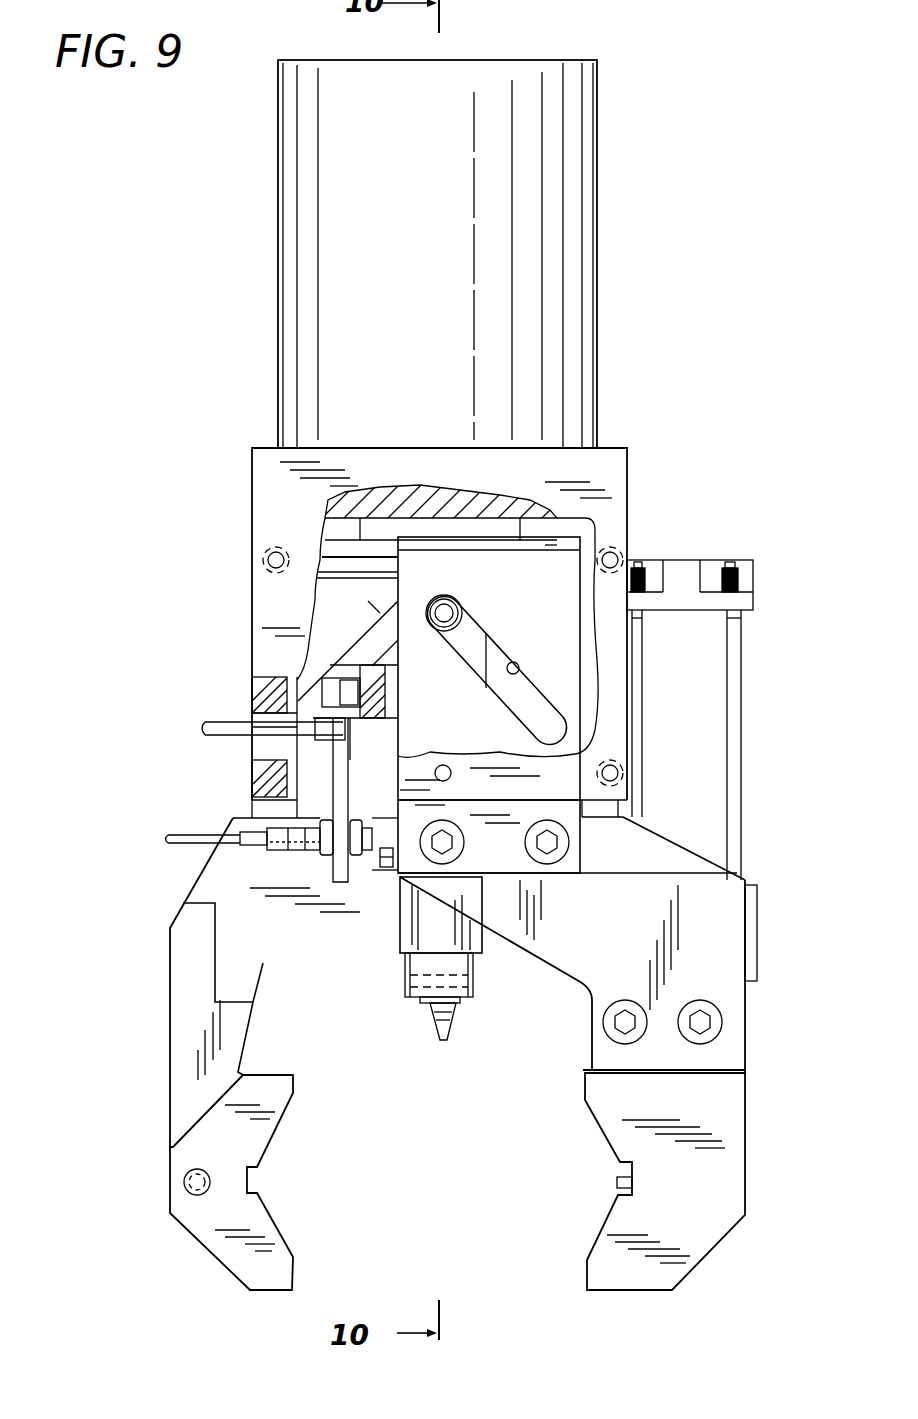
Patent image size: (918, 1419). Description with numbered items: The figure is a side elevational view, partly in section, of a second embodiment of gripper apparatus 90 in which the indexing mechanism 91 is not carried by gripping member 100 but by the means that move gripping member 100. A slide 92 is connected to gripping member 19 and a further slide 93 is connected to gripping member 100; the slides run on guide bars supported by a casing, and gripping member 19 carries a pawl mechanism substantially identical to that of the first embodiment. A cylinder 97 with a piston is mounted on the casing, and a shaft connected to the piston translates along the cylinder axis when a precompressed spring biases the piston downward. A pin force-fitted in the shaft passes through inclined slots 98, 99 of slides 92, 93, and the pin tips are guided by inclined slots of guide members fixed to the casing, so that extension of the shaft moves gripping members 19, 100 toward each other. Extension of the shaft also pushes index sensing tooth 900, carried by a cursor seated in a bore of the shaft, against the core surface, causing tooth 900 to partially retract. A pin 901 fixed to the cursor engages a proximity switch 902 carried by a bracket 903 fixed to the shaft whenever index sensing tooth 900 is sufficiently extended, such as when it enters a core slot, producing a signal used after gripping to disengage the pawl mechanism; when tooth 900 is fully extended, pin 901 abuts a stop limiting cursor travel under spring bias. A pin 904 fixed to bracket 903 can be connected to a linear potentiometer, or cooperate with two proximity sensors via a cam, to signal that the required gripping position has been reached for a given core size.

The gripping member 19 is at (237, 1252).
The gripper apparatus 90 is at (153, 965).
The indexing mechanism 91 is at (238, 489).
The slide 92 is at (557, 563).
The further slide 93 is at (337, 607).
The cylinder 97 is at (597, 293).
The inclined slot 98 is at (517, 666).
The inclined slot 99 is at (388, 618).
The gripping member 100 is at (706, 1234).
The index sensing tooth 900 is at (447, 1020).
The pin 901 is at (383, 866).
The proximity switch 902 is at (300, 853).
The bracket 903 is at (343, 884).
The pin 904 is at (240, 738).